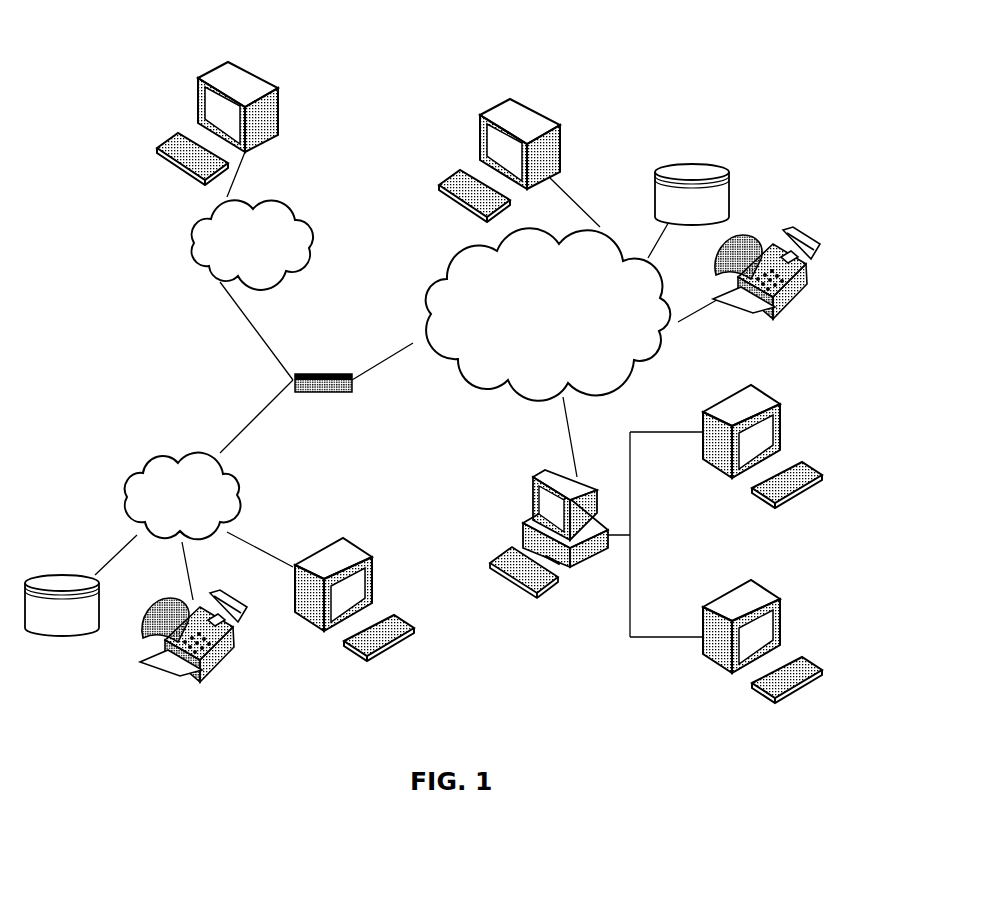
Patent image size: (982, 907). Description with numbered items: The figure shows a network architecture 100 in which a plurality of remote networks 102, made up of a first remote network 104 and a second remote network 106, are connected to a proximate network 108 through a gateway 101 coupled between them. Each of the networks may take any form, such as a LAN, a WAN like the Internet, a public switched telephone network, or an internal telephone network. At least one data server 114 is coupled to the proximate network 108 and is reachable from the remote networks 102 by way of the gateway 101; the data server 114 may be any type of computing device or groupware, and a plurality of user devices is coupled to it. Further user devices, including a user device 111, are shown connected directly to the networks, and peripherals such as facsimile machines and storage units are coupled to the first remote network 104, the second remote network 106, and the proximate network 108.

The architecture 100 is at (148, 45).
The gateway 101 is at (311, 373).
The remote networks 102 is at (168, 295).
The first remote network 104 is at (115, 470).
The second remote network 106 is at (317, 218).
The proximate network 108 is at (640, 375).
The user device 111 is at (557, 128).
The data server 114 is at (533, 490).